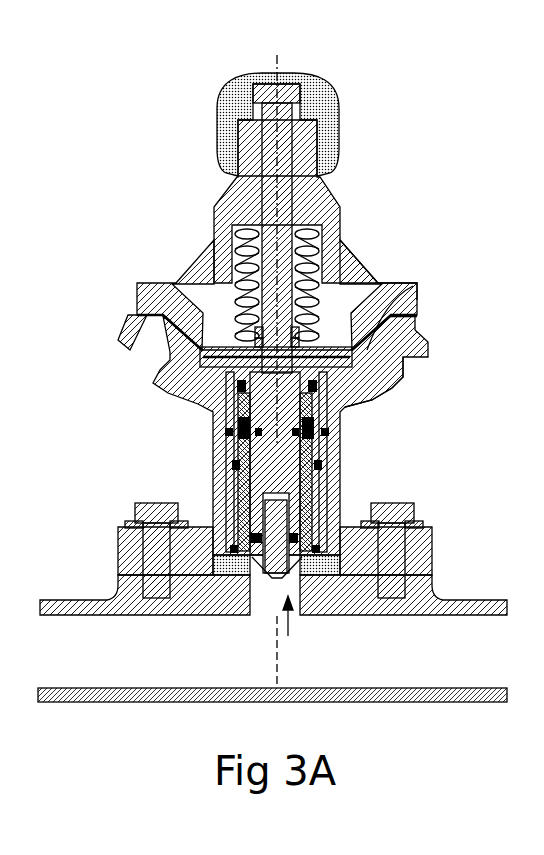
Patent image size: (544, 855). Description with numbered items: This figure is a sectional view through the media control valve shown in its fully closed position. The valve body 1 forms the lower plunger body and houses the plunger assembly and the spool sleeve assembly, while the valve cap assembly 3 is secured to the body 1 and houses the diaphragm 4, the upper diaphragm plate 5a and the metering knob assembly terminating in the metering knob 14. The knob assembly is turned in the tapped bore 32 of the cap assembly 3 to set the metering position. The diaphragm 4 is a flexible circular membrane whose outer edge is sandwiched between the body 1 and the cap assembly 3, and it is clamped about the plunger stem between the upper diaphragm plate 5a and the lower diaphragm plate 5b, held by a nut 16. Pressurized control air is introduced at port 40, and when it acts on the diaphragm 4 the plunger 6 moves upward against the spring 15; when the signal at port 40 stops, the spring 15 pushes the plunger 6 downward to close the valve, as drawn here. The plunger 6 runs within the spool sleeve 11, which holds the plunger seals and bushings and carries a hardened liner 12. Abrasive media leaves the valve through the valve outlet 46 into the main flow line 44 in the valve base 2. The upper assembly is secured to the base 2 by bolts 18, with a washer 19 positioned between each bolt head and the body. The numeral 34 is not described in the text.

The valve body 1 is at (395, 364).
The valve base 2 is at (428, 593).
The valve cap assembly 3 is at (412, 307).
The diaphragm 4 is at (405, 283).
The upper diaphragm plate 5a is at (340, 348).
The lower diaphragm plate 5b is at (365, 396).
The plunger 6 is at (292, 460).
The spool sleeve 11 is at (328, 547).
The hardened liner 12 is at (247, 478).
The metering knob 14 is at (323, 97).
The spring 15 is at (318, 250).
The nut 16 is at (262, 330).
The bolt 18 is at (398, 510).
The washer 19 is at (420, 522).
The tapped bore 32 is at (263, 213).
The nut 34 is at (262, 328).
The air inlet port 40 is at (168, 343).
The main flow line 44 is at (457, 663).
The valve outlet 46 is at (288, 636).